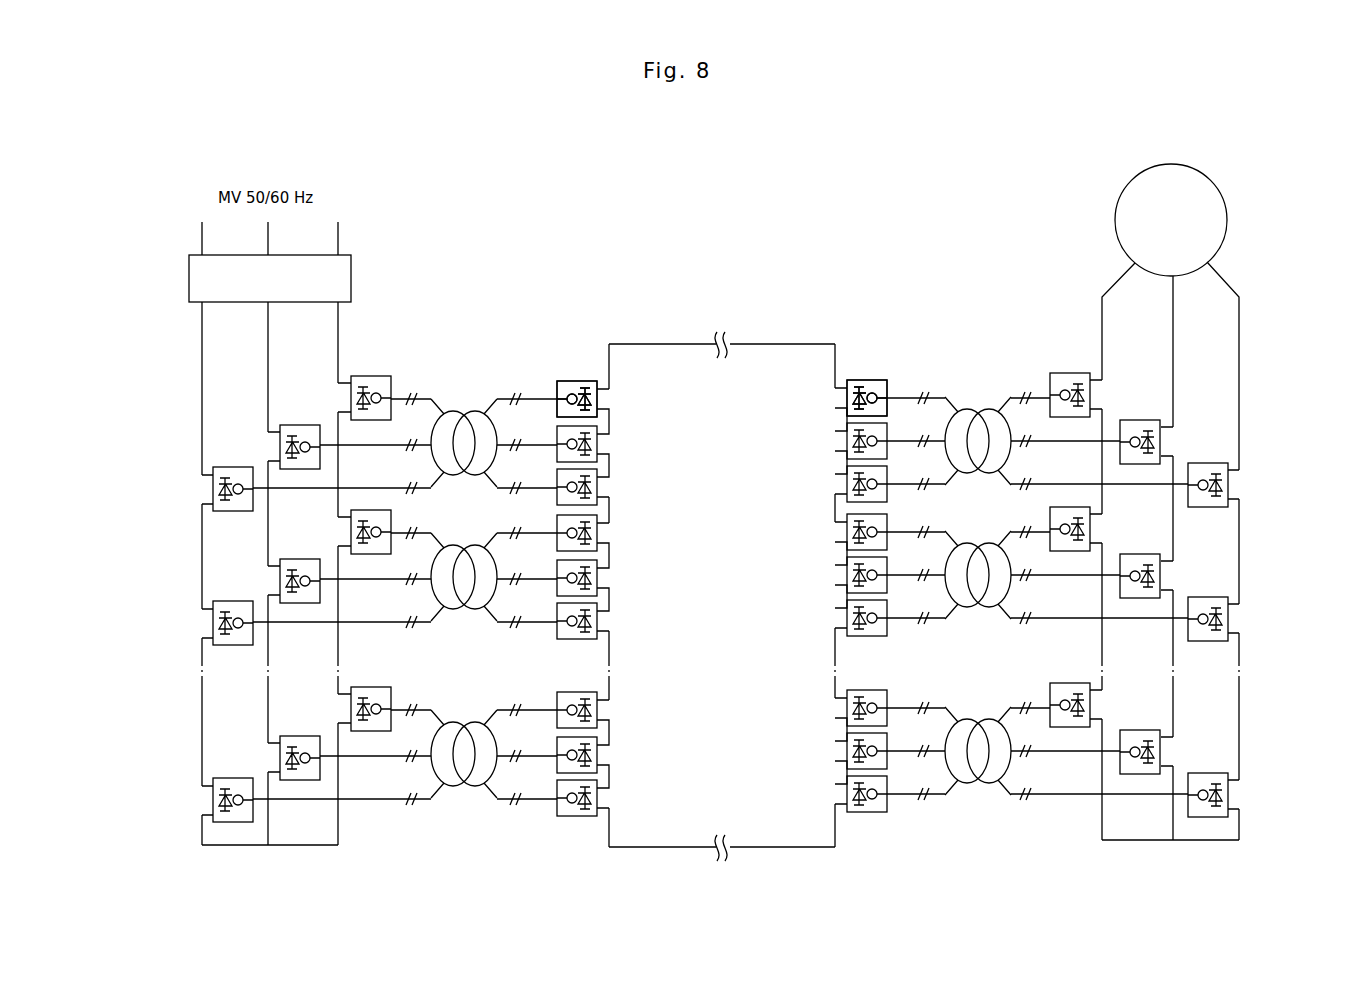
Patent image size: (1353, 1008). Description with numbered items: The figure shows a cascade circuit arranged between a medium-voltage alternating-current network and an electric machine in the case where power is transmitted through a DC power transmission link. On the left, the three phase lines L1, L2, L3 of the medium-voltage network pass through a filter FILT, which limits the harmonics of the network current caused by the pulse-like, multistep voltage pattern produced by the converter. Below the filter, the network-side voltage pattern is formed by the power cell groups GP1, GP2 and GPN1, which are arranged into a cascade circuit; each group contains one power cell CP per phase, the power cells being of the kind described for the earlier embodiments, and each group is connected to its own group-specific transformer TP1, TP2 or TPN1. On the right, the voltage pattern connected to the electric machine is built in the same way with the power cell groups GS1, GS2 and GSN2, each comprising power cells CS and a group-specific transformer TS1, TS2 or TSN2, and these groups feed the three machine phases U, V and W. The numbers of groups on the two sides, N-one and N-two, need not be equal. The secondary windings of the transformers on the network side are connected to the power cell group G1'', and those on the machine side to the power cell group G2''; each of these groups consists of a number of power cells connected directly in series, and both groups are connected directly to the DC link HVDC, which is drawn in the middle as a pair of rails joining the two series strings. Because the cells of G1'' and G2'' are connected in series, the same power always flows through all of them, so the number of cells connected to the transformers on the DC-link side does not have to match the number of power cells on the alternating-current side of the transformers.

The network phase line L1 is at (270, 533).
The network phase line L2 is at (282, 533).
The network phase line L3 is at (352, 533).
The filter FILT is at (270, 278).
The power cell CP is at (302, 433).
The power cell CS is at (1139, 429).
The group-specific transformer TP1 is at (464, 433).
The group-specific transformer TP2 is at (464, 567).
The group-specific transformer TPN1 is at (464, 744).
The group-specific transformer TS1 is at (978, 430).
The group-specific transformer TS2 is at (978, 564).
The group-specific transformer TSN2 is at (978, 740).
The power cell group G1'' is at (577, 368).
The power cell group G2'' is at (867, 367).
The power cell group GP1 is at (177, 392).
The power cell group GP2 is at (177, 527).
The power cell group GPN1 is at (177, 702).
The power cell group GS1 is at (1258, 387).
The power cell group GS2 is at (1258, 520).
The power cell group GSN2 is at (1258, 693).
The DC link HVDC is at (708, 357).
The machine phase terminal U is at (1170, 551).
The machine phase terminal V is at (1181, 558).
The machine phase terminal W is at (1223, 549).